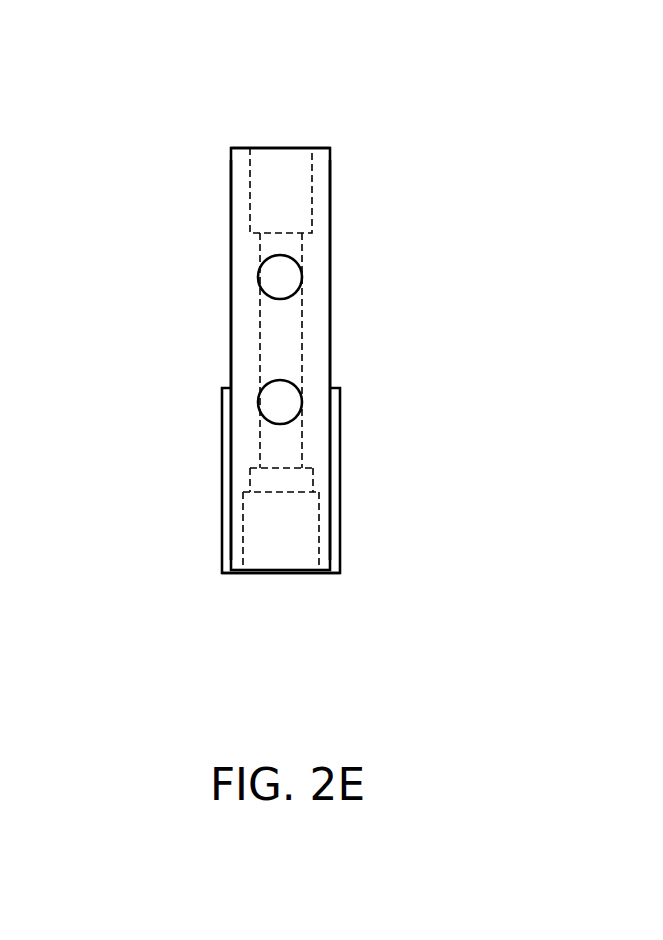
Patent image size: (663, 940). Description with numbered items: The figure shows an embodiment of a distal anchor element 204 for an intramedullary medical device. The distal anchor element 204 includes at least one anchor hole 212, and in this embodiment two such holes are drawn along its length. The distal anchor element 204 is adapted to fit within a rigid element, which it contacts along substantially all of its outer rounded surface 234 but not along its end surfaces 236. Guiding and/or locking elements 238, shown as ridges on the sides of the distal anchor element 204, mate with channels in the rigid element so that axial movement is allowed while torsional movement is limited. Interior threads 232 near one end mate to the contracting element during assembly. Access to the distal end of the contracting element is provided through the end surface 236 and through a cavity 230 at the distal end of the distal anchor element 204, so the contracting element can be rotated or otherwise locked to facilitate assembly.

The distal anchor element 204 is at (313, 308).
The anchor hole 212 is at (275, 283).
The cavity 230 is at (260, 528).
The interior threads 232 is at (296, 172).
The outer rounded surface 234 is at (230, 172).
The end surfaces 236 is at (263, 135).
The guiding and/or locking elements 238 is at (222, 465).